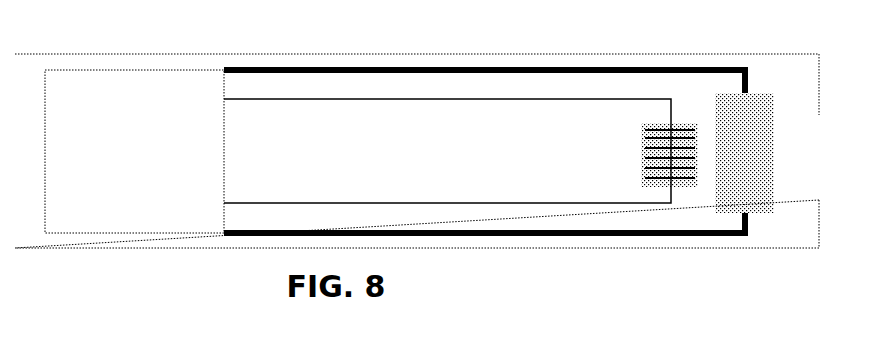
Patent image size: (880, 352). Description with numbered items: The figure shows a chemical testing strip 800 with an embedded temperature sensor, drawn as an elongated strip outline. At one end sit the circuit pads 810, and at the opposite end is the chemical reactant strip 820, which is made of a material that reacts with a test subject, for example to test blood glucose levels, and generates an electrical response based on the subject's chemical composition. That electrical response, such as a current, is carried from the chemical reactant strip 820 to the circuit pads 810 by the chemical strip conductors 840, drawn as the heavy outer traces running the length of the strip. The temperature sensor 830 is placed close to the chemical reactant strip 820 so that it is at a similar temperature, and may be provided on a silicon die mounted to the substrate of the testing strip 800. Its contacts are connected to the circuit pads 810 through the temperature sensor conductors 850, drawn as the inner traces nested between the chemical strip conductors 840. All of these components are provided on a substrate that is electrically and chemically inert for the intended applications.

The chemical testing strip 800 is at (417, 189).
The circuit pads 810 is at (134, 151).
The chemical reactant strip 820 is at (805, 120).
The temperature sensor 830 is at (642, 143).
The chemical strip conductors 840 is at (503, 229).
The temperature sensor conductors 850 is at (316, 99).